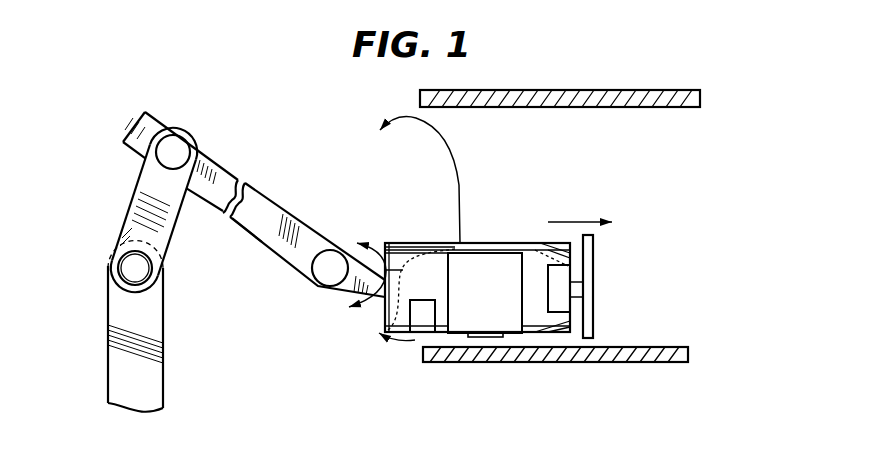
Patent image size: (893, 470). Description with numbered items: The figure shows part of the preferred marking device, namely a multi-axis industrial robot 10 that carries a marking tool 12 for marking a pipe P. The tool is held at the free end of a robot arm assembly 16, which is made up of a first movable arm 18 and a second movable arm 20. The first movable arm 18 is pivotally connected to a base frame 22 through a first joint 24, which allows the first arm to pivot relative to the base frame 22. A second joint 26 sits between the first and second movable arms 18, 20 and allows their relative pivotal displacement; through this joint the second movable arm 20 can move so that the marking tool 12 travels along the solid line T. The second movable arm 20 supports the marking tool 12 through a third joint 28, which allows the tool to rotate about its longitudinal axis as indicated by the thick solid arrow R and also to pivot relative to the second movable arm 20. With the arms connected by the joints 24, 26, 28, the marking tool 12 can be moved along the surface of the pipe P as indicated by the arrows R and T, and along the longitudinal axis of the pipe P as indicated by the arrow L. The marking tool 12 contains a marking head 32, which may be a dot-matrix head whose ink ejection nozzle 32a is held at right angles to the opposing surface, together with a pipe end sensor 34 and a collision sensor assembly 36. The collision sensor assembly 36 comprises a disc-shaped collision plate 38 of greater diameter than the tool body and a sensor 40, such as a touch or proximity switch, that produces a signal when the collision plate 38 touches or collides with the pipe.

The multi-axis industrial robot 10 is at (262, 172).
The marking tool 12 is at (494, 232).
The robot arm assembly 16 is at (249, 237).
The first movable arm 18 is at (152, 203).
The second movable arm 20 is at (270, 215).
The base frame 22 is at (155, 335).
The first joint 24 is at (130, 270).
The second joint 26 is at (176, 150).
The third joint 28 is at (332, 268).
The marking head 32 is at (500, 315).
The ink ejection nozzle 32a is at (492, 340).
The pipe end sensor 34 is at (418, 318).
The collision sensor assembly 36 is at (596, 303).
The collision plate 38 is at (594, 247).
The sensor 40 is at (560, 280).
The pipe P is at (540, 90).
The solid line T is at (461, 178).
The arrow R is at (375, 254).
The arrow L is at (580, 211).